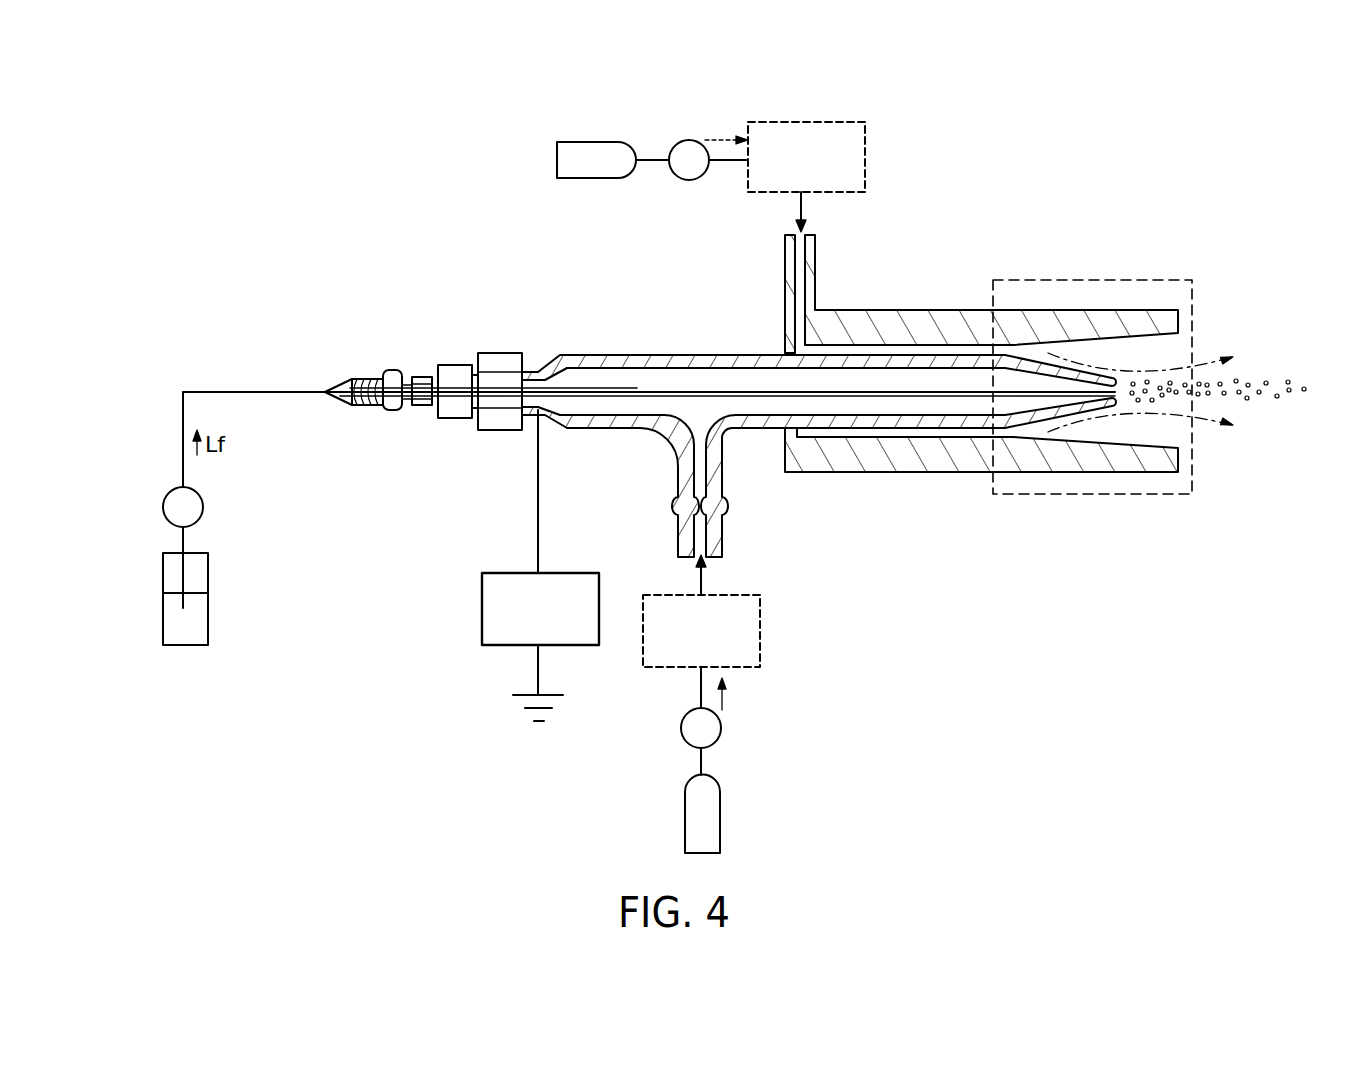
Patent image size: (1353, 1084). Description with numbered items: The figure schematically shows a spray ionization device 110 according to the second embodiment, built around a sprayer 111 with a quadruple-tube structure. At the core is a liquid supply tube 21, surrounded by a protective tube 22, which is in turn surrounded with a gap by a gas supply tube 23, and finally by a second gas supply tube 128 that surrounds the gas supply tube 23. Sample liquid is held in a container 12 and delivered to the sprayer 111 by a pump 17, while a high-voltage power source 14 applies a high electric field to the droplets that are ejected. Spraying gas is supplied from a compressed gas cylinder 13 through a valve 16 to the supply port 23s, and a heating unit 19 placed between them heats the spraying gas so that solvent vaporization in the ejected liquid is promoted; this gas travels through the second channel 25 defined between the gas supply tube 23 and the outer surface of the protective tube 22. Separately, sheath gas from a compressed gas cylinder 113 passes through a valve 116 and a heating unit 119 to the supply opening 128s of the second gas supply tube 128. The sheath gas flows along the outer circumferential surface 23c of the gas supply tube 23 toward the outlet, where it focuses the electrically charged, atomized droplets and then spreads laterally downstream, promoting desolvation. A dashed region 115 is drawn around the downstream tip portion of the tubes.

The spray ionization device 110 is at (203, 112).
The sprayer 111 is at (556, 308).
The compressed gas cylinder 113 is at (590, 150).
The valve 116 is at (686, 138).
The heating unit 119 is at (875, 162).
The second gas supply tube 128 is at (920, 310).
The supply opening 128s is at (790, 226).
The heating region 115 is at (1075, 496).
The gas supply tube 23 is at (764, 430).
The outer circumferential surface 23c is at (814, 432).
The supply port 23s is at (712, 562).
The liquid supply tube 21 is at (720, 455).
The protective tube 22 is at (889, 392).
The second channel 25 is at (955, 405).
The pump 17 is at (165, 492).
The container 12 is at (160, 622).
The high-voltage power source 14 is at (482, 610).
The heating unit 19 is at (765, 637).
The valve 16 is at (722, 734).
The cylinder 13 is at (690, 805).